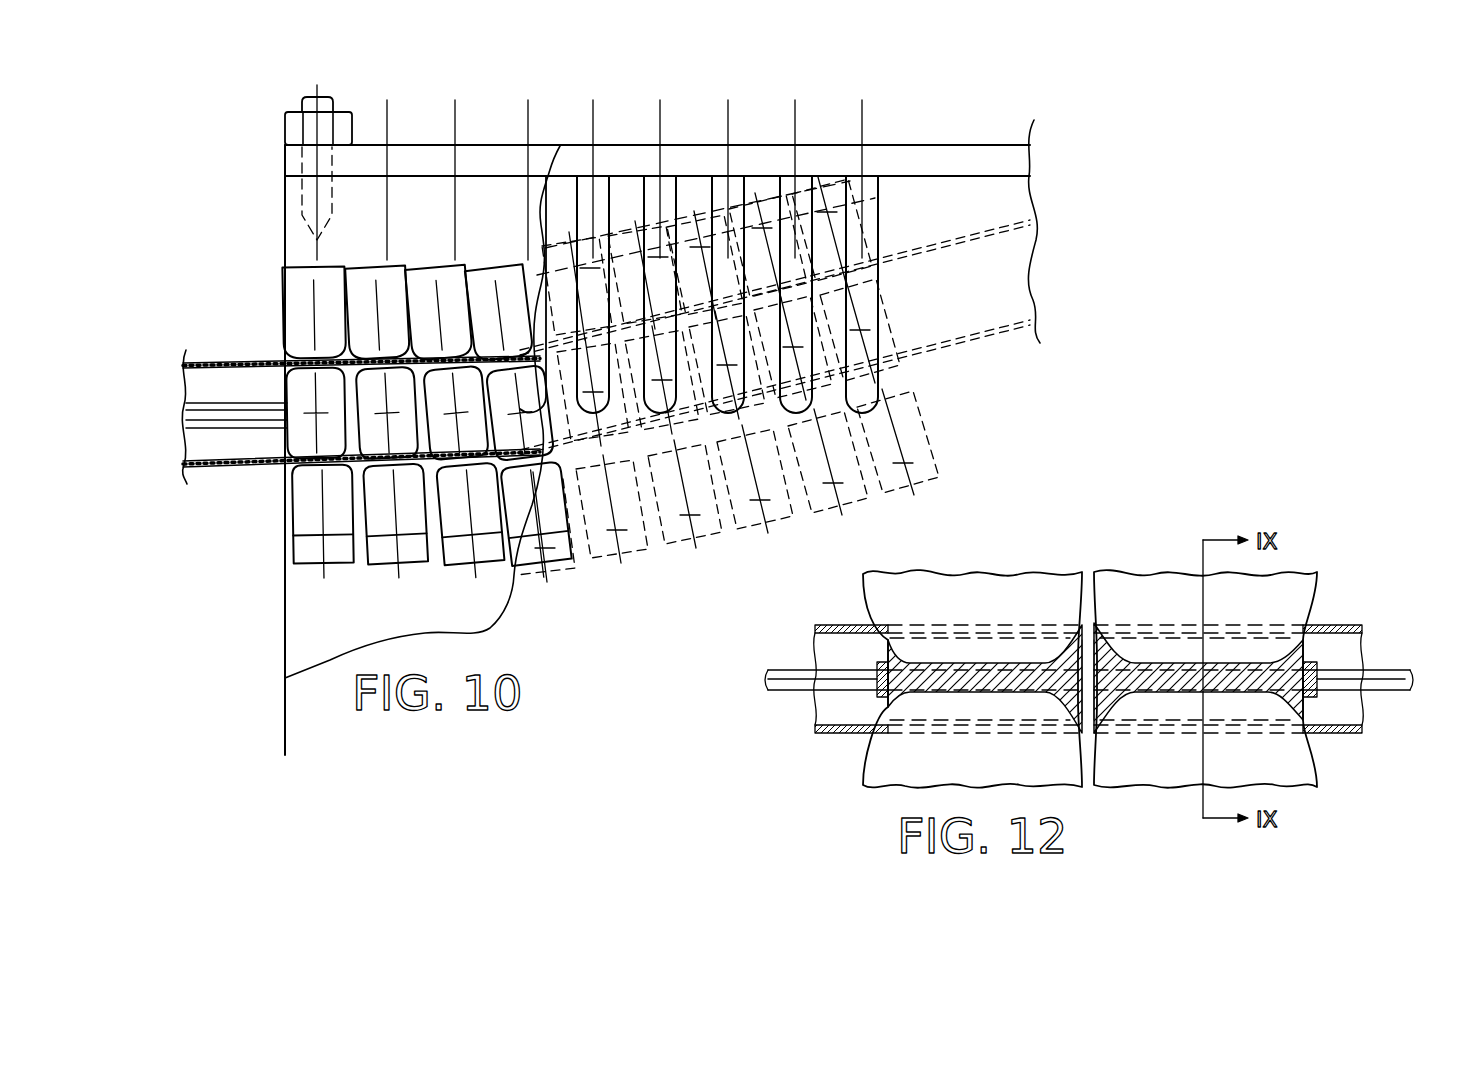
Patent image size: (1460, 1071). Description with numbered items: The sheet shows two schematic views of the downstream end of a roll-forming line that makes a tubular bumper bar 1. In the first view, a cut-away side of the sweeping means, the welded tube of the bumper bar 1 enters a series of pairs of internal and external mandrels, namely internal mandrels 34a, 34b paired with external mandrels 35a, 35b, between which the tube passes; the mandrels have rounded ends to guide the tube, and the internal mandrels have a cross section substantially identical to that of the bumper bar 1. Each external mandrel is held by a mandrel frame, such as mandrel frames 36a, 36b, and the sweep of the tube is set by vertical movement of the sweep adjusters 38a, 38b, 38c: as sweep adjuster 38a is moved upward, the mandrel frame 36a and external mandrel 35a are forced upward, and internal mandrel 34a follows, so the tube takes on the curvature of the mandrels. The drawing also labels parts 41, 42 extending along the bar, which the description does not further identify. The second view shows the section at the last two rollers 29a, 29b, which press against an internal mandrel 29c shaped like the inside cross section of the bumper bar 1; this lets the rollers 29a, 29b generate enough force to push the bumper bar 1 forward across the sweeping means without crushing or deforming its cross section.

In FIG. 10, the bumper bar 1 is at (232, 360).
In FIG. 12, the bumper bar 1 is at (843, 735).
In FIG. 12, the roller 29a is at (1013, 592).
In FIG. 12, the roller 29b is at (1162, 592).
In FIG. 12, the internal mandrel 29c is at (1087, 623).
In FIG. 10, the internal mandrel 34a is at (284, 466).
In FIG. 10, the internal mandrel 34b is at (348, 462).
In FIG. 10, the external mandrel 35a is at (290, 528).
In FIG. 10, the external mandrel 35b is at (353, 533).
In FIG. 10, the mandrel frame 36a is at (347, 568).
In FIG. 10, the lower roller bearing block 36b is at (417, 560).
In FIG. 10, the sweep adjuster 38a is at (317, 90).
In FIG. 10, the sweep adjuster 38b is at (386, 103).
In FIG. 10, the sweep adjuster 38c is at (452, 107).
In FIG. 10, the guide tube 41 is at (183, 412).
In FIG. 10, the shaft 42 is at (196, 400).
In FIG. 12, the shaft 42 is at (783, 692).